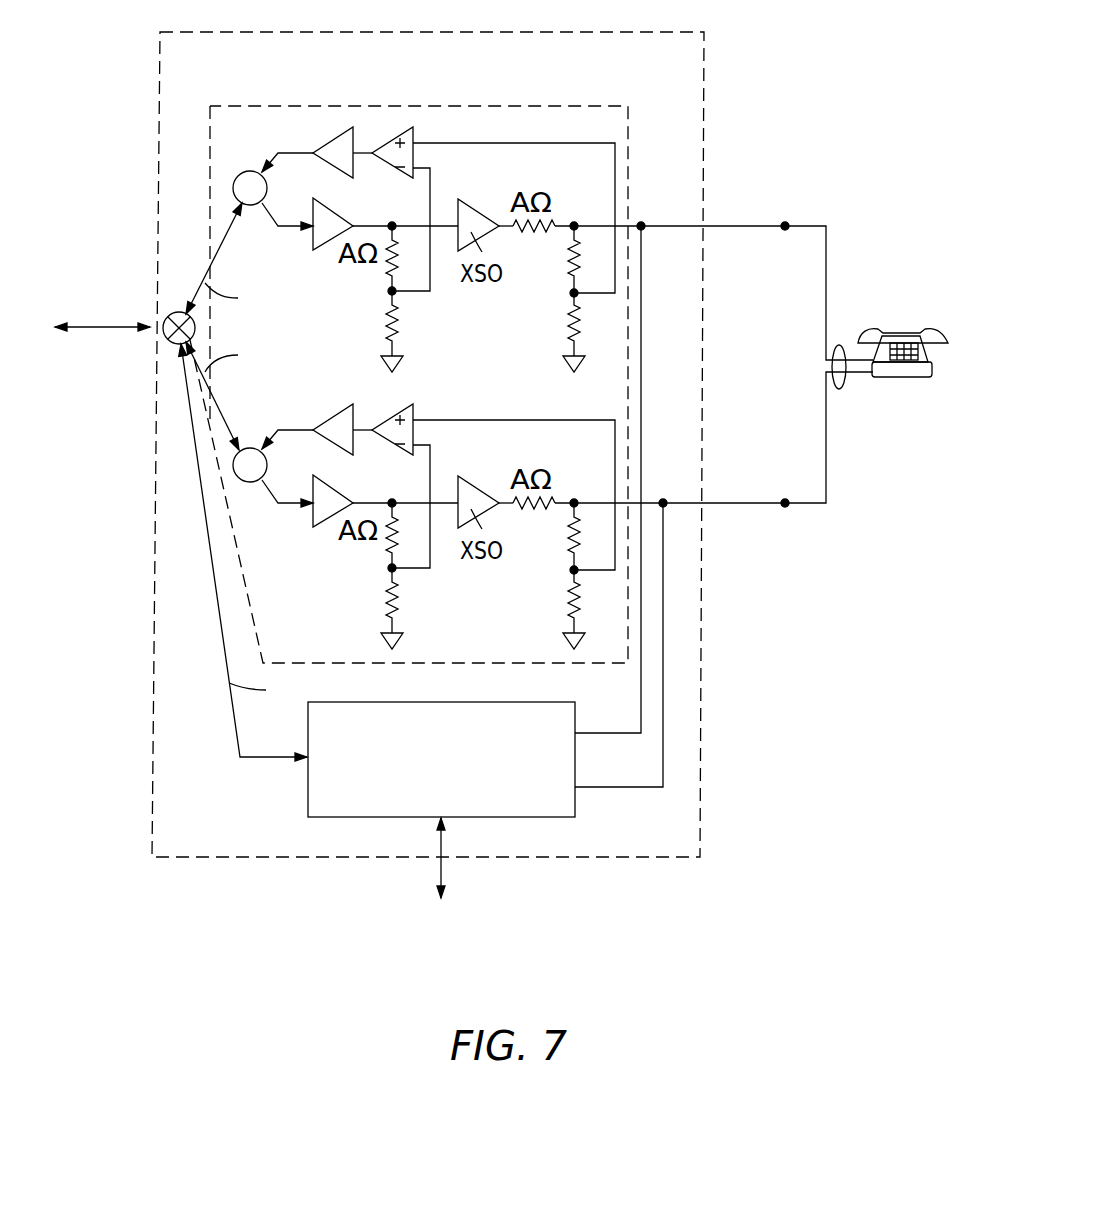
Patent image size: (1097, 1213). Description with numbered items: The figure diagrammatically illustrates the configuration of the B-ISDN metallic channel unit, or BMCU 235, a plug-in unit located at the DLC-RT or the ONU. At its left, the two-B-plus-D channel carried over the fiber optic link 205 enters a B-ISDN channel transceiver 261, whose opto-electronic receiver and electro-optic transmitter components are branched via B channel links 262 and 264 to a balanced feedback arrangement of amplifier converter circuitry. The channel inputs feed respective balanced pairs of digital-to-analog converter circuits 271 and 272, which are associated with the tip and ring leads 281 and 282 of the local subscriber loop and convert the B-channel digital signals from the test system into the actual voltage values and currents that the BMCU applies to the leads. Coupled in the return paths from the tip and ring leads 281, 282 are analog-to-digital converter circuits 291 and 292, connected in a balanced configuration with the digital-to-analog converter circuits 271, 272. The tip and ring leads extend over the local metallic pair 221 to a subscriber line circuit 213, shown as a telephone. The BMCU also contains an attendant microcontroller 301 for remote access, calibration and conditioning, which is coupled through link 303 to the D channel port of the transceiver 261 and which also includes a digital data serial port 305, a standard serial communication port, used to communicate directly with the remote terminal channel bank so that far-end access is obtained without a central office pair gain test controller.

The B-ISDN metallic channel unit (BMCU) 235 is at (617, 32).
The fiber optic link 205 is at (121, 330).
The B-ISDN channel transceiver 261 is at (196, 333).
The B channel link 262 is at (206, 266).
The B channel link 264 is at (213, 397).
The digital-to-analog converter circuit 271 is at (313, 249).
The digital-to-analog converter circuit 272 is at (313, 526).
The analog-to-digital converter circuit 291 is at (340, 141).
The analog-to-digital converter circuit 292 is at (333, 419).
The tip lead 281 is at (733, 226).
The ring lead 282 is at (733, 504).
The metallic pair 221 is at (840, 390).
The subscriber line circuit 213 is at (907, 378).
The microcontroller 301 is at (577, 806).
The link 303 is at (229, 683).
The digital data serial port 305 is at (445, 818).